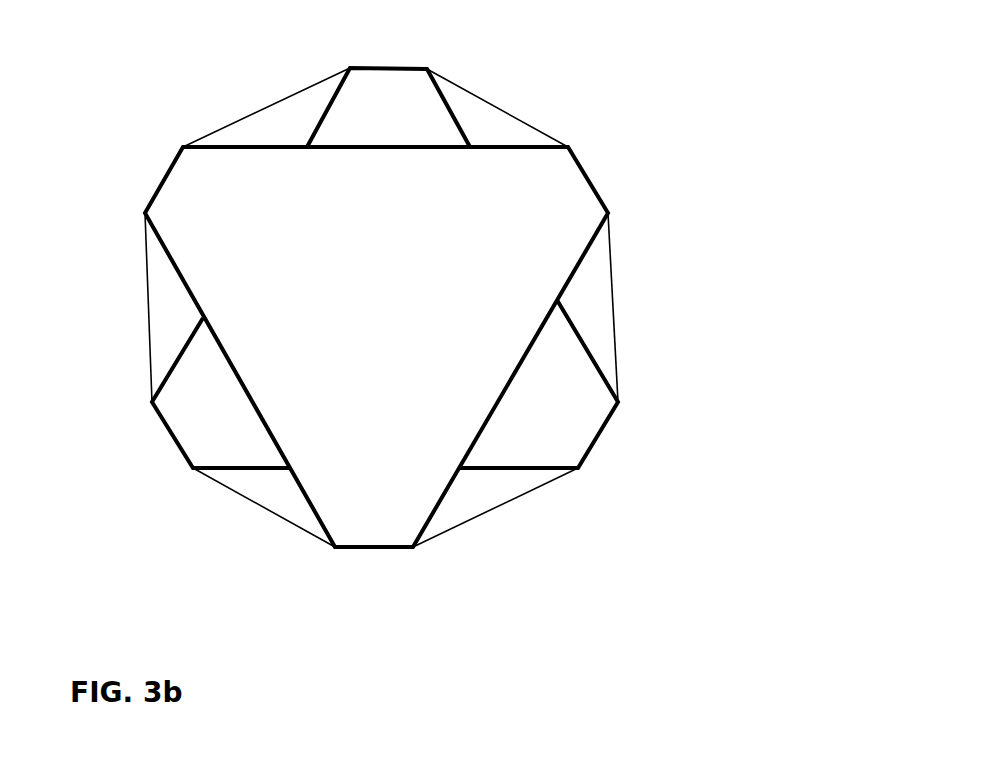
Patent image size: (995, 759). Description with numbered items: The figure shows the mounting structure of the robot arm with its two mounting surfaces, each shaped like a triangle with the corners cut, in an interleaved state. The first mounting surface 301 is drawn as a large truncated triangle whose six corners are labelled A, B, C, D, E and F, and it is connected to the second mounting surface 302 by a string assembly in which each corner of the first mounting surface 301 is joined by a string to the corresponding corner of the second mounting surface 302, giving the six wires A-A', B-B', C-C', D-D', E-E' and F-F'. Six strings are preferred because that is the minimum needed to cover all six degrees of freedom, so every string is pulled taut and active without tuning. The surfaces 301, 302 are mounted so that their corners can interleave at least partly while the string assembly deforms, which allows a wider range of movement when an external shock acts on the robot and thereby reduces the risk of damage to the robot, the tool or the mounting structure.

The first mounting surface 301 is at (498, 170).
The second mounting surface 302 is at (258, 462).
The corner A is at (134, 311).
The corner B is at (261, 94).
The corner C is at (507, 97).
The corner D is at (627, 310).
The corner E is at (504, 526).
The corner F is at (254, 527).